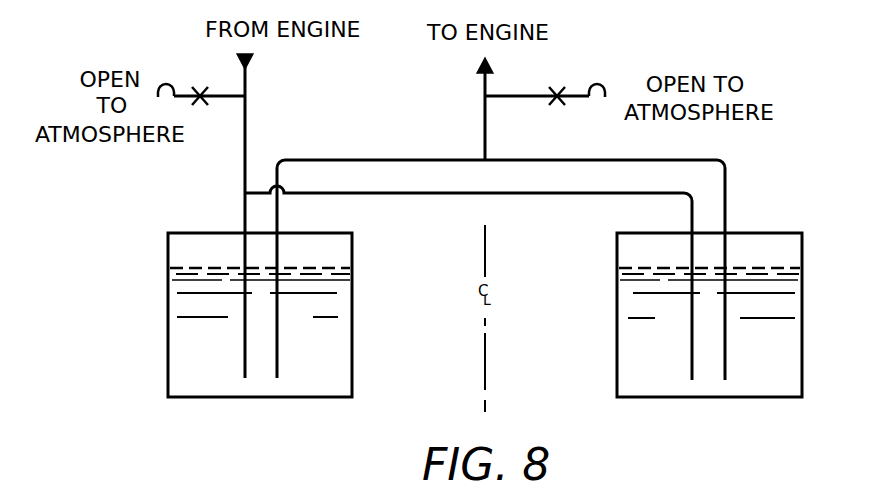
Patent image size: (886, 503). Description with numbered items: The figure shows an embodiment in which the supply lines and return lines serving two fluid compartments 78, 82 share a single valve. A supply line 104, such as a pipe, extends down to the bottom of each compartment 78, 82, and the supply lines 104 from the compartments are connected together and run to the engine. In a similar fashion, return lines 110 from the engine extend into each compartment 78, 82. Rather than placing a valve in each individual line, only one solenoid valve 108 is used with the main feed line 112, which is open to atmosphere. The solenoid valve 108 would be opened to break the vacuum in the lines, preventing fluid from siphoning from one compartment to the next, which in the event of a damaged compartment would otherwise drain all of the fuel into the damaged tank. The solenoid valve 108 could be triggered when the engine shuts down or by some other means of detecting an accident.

The left fuel tank 78 is at (181, 372).
The right fuel tank 82 is at (780, 341).
The supply line 104 is at (488, 74).
The solenoid valve 108 is at (188, 70).
The return line 110 is at (247, 73).
The main feed line 112 is at (246, 115).